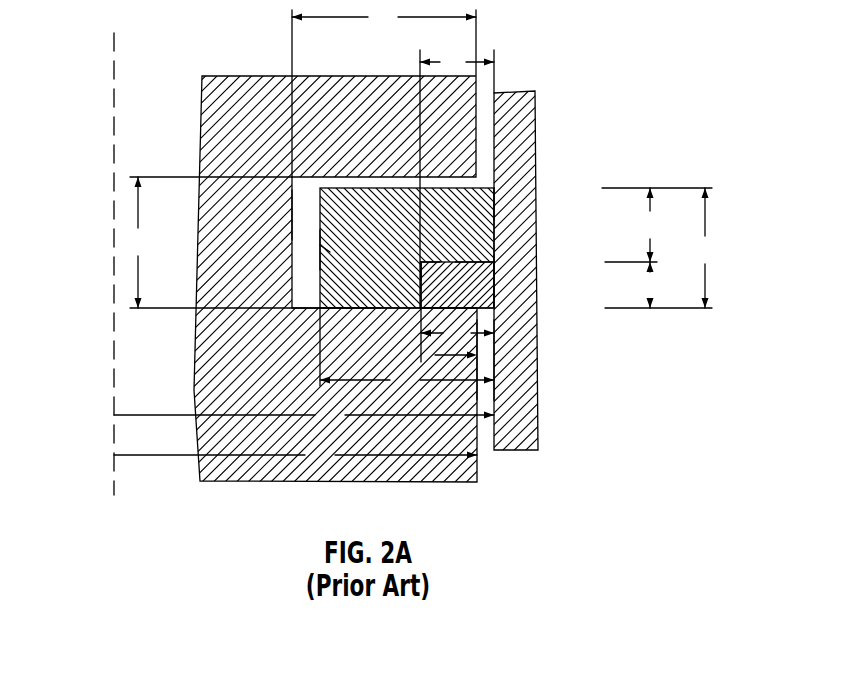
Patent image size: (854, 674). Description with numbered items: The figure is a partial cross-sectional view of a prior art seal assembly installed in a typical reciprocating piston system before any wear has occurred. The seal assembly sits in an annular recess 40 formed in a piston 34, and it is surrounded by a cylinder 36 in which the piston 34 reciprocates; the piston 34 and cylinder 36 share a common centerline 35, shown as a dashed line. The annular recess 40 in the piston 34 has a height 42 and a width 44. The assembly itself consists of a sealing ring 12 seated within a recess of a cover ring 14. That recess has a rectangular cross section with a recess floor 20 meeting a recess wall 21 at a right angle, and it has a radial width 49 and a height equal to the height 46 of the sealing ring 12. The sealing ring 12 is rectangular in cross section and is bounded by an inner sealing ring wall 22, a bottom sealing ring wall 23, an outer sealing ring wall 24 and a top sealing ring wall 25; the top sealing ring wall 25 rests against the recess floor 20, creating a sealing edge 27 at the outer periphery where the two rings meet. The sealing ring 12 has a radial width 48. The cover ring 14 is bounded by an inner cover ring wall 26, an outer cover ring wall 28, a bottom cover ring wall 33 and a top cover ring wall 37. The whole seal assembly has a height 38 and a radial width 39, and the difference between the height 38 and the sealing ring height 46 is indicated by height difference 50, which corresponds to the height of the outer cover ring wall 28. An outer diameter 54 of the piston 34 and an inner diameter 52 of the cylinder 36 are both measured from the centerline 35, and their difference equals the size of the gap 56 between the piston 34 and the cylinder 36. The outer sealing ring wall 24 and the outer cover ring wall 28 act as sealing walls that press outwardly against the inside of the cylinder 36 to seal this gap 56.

The sealing ring 12 is at (500, 302).
The cover ring 14 is at (330, 252).
The recess floor 20 is at (498, 267).
The recess wall 21 is at (432, 273).
The inner sealing ring wall 22 is at (412, 266).
The bottom sealing ring wall 23 is at (432, 308).
The outer sealing ring wall 24 is at (506, 293).
The top sealing ring wall 25 is at (429, 252).
The inner cover ring wall 26 is at (310, 248).
The sealing edge 27 is at (477, 244).
The outer cover ring wall 28 is at (504, 203).
The bottom cover ring wall 33 is at (351, 318).
The piston 34 is at (216, 135).
The centerline 35 is at (114, 105).
The cylinder 36 is at (517, 117).
The top cover ring wall 37 is at (376, 180).
The height 38 is at (704, 248).
The radial width 39 is at (407, 353).
The annular recess 40 is at (298, 215).
The height 42 is at (222, 242).
The width 44 is at (384, 88).
The height 46 is at (658, 285).
The radial width 48 is at (457, 335).
The radial width 49 is at (457, 176).
The height difference 50 is at (657, 225).
The inner diameter 52 is at (304, 415).
The outer diameter 54 is at (295, 455).
The gap 56 is at (505, 358).